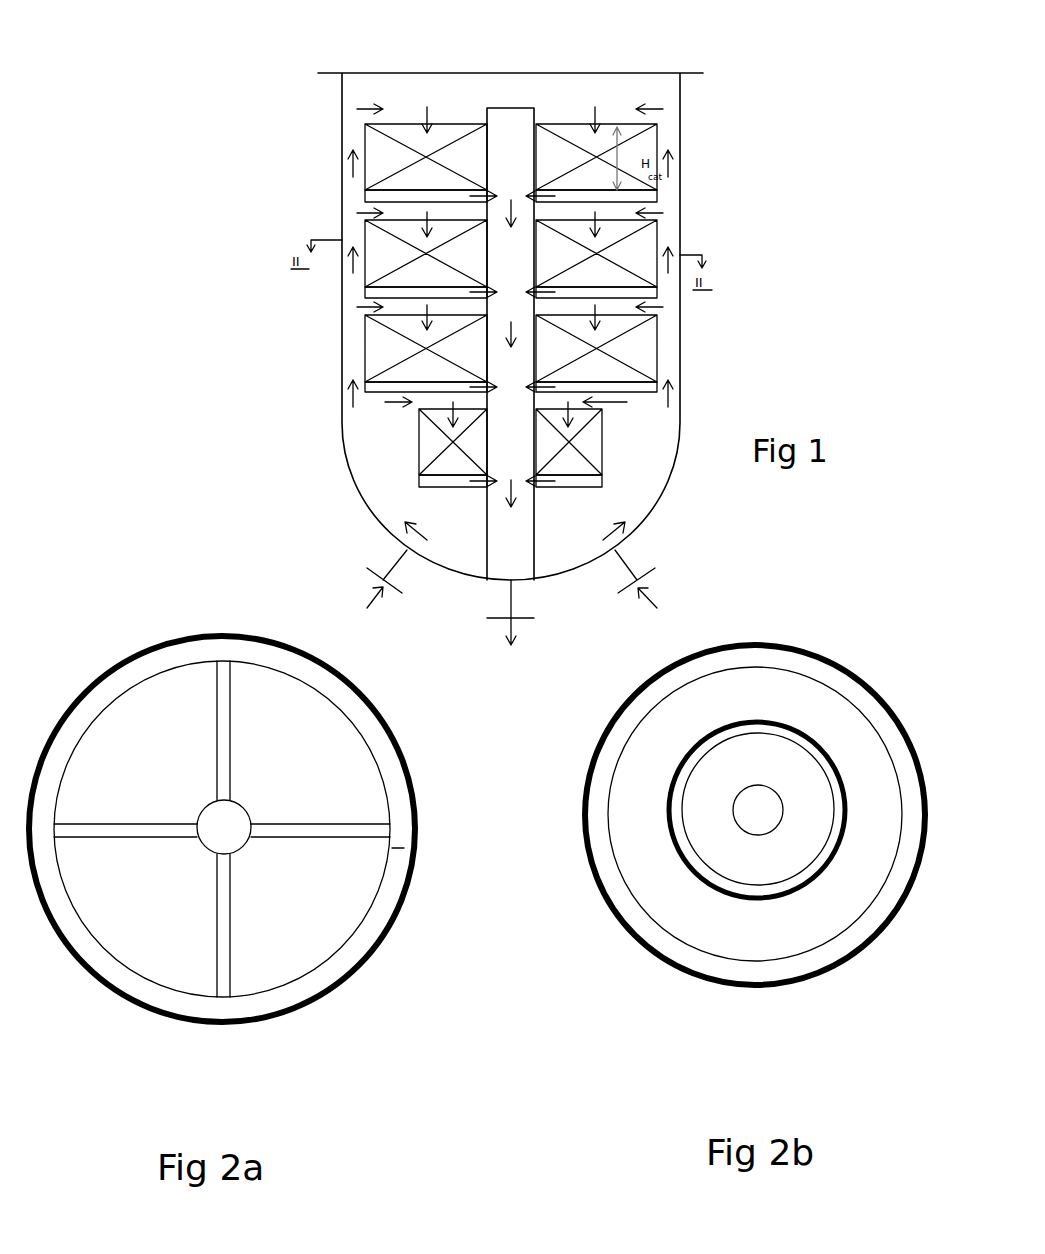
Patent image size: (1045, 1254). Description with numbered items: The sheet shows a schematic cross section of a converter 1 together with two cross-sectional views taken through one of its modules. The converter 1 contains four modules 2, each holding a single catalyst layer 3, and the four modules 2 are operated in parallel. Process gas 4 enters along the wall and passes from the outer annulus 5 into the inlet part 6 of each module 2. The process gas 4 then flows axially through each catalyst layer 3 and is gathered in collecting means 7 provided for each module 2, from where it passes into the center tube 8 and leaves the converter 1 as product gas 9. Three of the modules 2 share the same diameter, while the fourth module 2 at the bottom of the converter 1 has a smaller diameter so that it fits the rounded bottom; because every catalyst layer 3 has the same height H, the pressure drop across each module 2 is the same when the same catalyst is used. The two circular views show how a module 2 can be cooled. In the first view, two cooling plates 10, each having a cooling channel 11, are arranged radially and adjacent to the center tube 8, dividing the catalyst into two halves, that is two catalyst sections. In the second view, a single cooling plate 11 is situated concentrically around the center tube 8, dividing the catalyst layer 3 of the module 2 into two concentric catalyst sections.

In FIG. 1, the converter 1 is at (680, 190).
In FIG. 2A, the converter 1 is at (397, 917).
In FIG. 2B, the converter 1 is at (855, 958).
In FIG. 1, the module 2 is at (418, 448).
In FIG. 2A, the module 2 is at (388, 802).
In FIG. 2B, the module 2 is at (877, 897).
In FIG. 1, the catalyst layer 3 is at (643, 350).
In FIG. 2A, the catalyst layer 3 is at (137, 710).
In FIG. 2B, the catalyst layer 3 is at (798, 783).
In FIG. 1, the process gas 4 is at (428, 114).
In FIG. 1, the outer annulus 5 is at (670, 330).
In FIG. 2A, the outer annulus 5 is at (398, 840).
In FIG. 2B, the outer annulus 5 is at (602, 833).
In FIG. 1, the inlet part 6 is at (403, 208).
In FIG. 1, the collecting means 7 is at (650, 197).
In FIG. 1, the center tube 8 is at (513, 145).
In FIG. 2A, the center tube 8 is at (230, 835).
In FIG. 2B, the center tube 8 is at (763, 813).
In FIG. 1, the product gas 9 is at (525, 632).
In FIG. 2A, the cooling plate 10 is at (235, 713).
In FIG. 2B, the cooling plate 10 is at (750, 893).
In FIG. 2A, the cooling channel 11 is at (360, 822).
In FIG. 2B, the cooling channel 11 is at (753, 895).